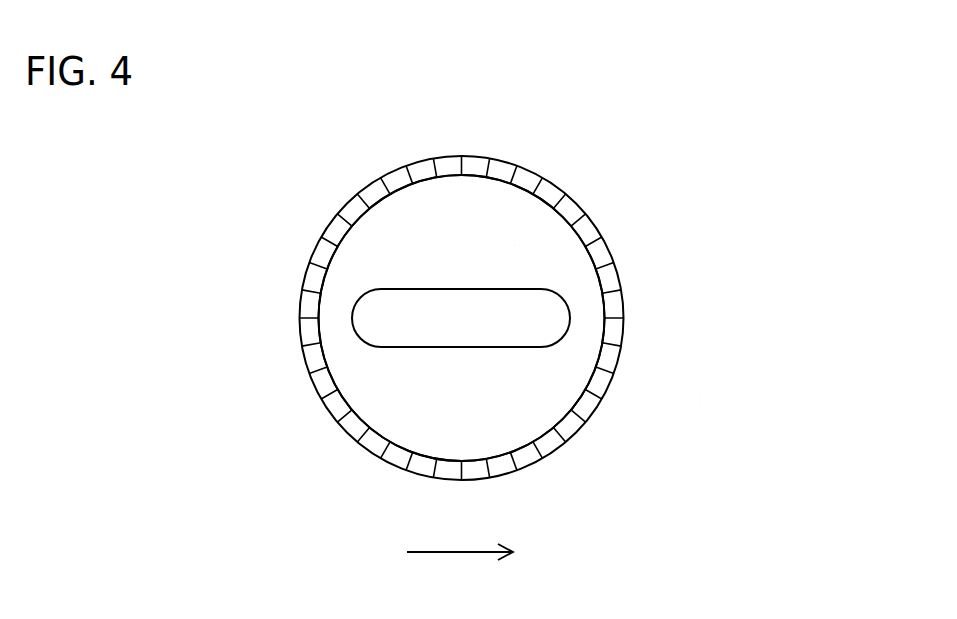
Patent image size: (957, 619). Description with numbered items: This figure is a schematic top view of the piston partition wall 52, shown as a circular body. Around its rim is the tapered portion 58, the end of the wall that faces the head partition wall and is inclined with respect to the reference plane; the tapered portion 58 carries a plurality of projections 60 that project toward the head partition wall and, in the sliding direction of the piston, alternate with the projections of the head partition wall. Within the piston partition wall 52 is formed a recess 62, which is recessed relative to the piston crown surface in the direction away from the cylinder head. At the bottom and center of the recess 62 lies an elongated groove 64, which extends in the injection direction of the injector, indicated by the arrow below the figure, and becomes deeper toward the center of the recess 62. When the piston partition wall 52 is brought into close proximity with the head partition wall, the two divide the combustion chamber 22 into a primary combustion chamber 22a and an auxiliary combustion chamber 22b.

The combustion chamber 22 is at (499, 293).
The primary combustion chamber 22a is at (718, 413).
The auxiliary combustion chamber 22b is at (483, 412).
The piston partition wall 52 is at (622, 336).
The tapered portion 58 is at (622, 305).
The projections 60 is at (310, 331).
The recess 62 is at (515, 245).
The groove 64 is at (462, 289).